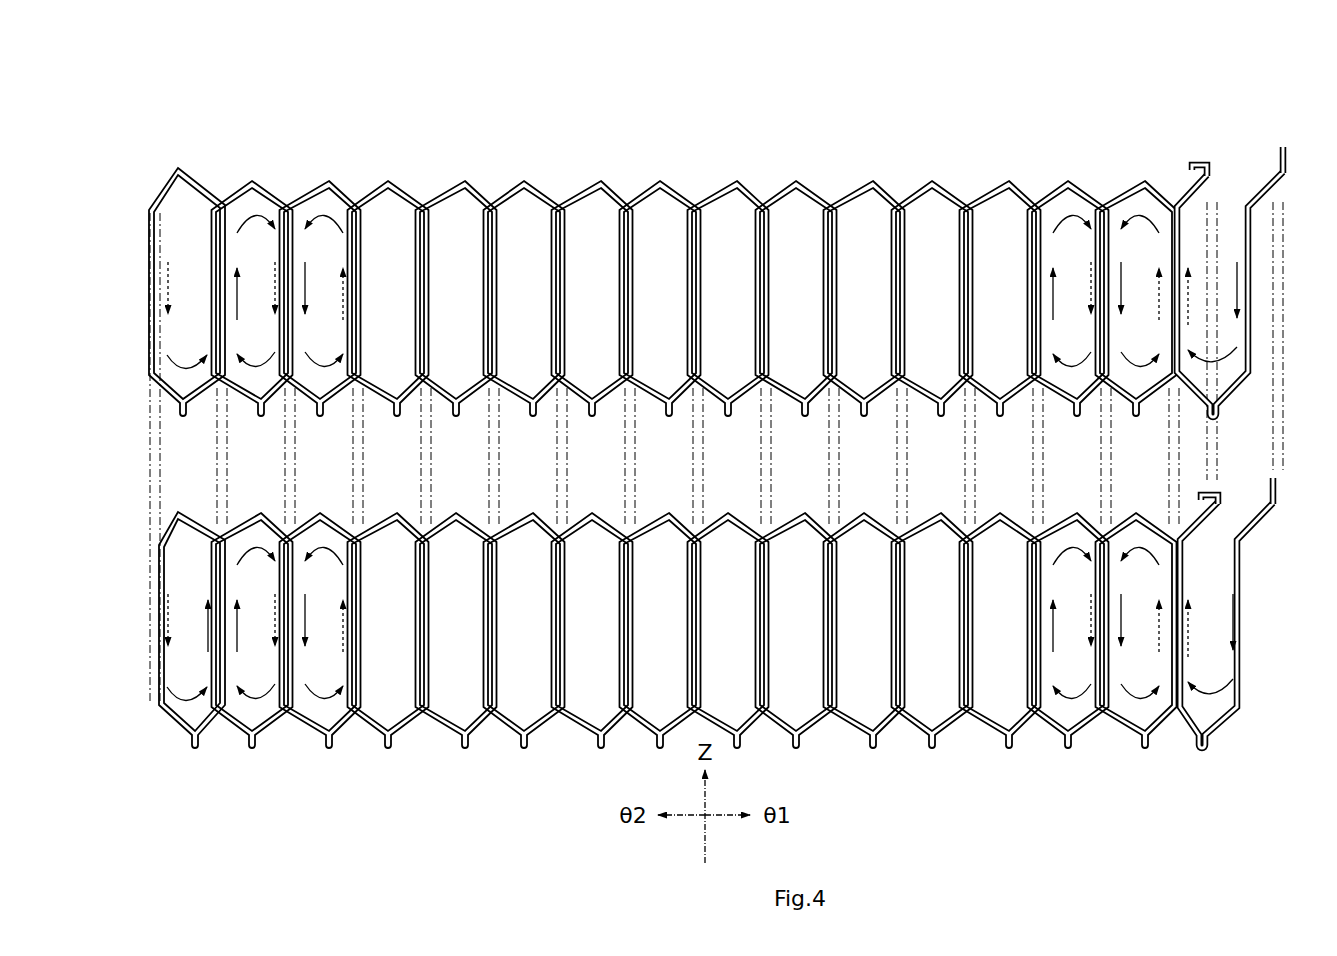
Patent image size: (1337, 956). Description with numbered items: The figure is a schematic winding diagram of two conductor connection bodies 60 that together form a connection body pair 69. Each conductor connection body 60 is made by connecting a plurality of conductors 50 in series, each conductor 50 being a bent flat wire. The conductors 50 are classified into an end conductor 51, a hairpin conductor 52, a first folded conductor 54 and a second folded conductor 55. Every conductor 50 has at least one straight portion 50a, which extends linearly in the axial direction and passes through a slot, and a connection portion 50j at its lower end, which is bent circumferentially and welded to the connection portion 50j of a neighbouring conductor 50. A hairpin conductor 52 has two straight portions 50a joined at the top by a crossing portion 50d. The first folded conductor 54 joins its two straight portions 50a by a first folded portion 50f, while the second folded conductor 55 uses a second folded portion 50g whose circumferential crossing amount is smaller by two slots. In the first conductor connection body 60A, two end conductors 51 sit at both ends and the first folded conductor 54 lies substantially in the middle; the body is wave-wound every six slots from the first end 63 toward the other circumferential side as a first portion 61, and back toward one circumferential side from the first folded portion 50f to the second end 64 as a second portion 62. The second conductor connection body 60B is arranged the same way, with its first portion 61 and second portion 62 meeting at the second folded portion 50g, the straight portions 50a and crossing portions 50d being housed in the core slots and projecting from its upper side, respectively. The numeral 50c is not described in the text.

The conductor 50 is at (698, 405).
The straight portion 50a is at (147, 262).
The coil end portion 50c is at (1257, 528).
The crossing portion 50d is at (1052, 196).
The first folded portion 50f is at (179, 166).
The second folded portion 50g is at (179, 510).
The connection portion 50j is at (877, 385).
The end conductor 51 is at (1182, 180).
The hairpin conductor 52 is at (248, 165).
The first folded conductor 54 is at (160, 165).
The second folded conductor 55 is at (152, 525).
The conductor connection body 60 is at (1257, 435).
The first conductor connection body 60A is at (1244, 106).
The second conductor connection body 60B is at (1208, 758).
The first portion 61 is at (1258, 230).
The second portion 62 is at (1182, 258).
The first end 63 is at (1285, 172).
The second end 64 is at (1210, 162).
The connection body pair 69 is at (1160, 100).